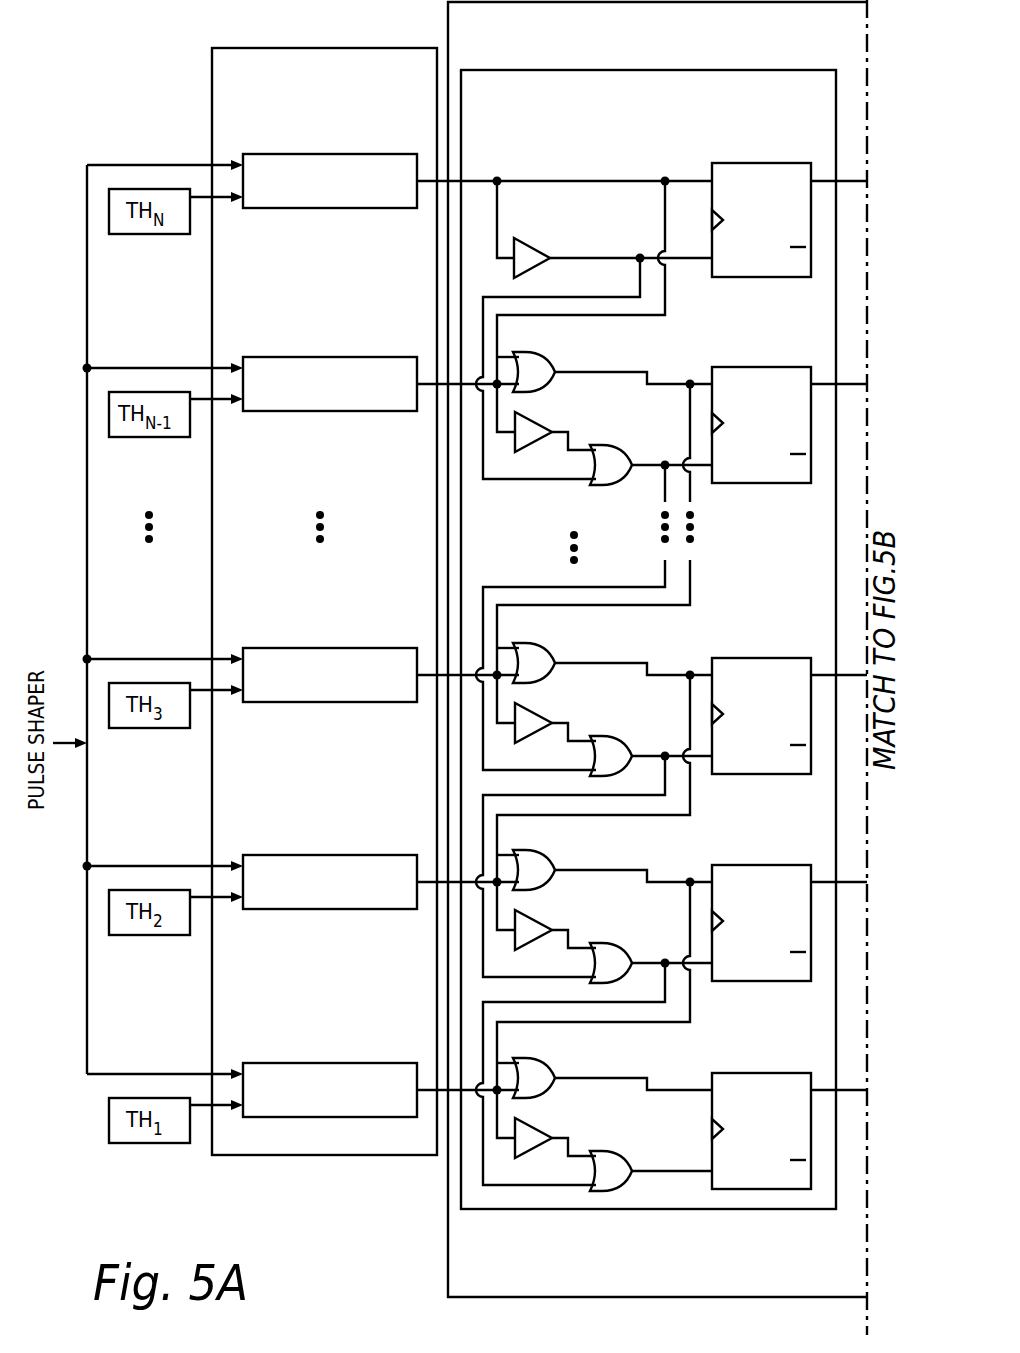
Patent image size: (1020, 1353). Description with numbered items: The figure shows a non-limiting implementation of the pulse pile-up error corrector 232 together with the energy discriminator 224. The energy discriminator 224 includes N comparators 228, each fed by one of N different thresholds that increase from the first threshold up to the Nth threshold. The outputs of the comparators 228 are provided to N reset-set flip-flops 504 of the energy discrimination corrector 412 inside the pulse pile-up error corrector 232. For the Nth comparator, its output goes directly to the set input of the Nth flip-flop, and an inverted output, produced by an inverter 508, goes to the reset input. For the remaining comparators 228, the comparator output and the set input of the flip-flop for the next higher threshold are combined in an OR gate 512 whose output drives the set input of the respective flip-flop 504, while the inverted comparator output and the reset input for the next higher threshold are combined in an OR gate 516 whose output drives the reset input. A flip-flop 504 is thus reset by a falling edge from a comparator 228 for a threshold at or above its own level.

The energy discriminator 224 is at (212, 92).
The comparators 228 is at (278, 154).
The pulse pile-up error corrector 232 is at (620, 1297).
The energy discrimination corrector 412 is at (658, 1209).
The RS flip-flops 504 is at (727, 163).
The inverter 508 is at (525, 242).
The OR gates 512 is at (533, 352).
The OR gates 516 is at (612, 484).